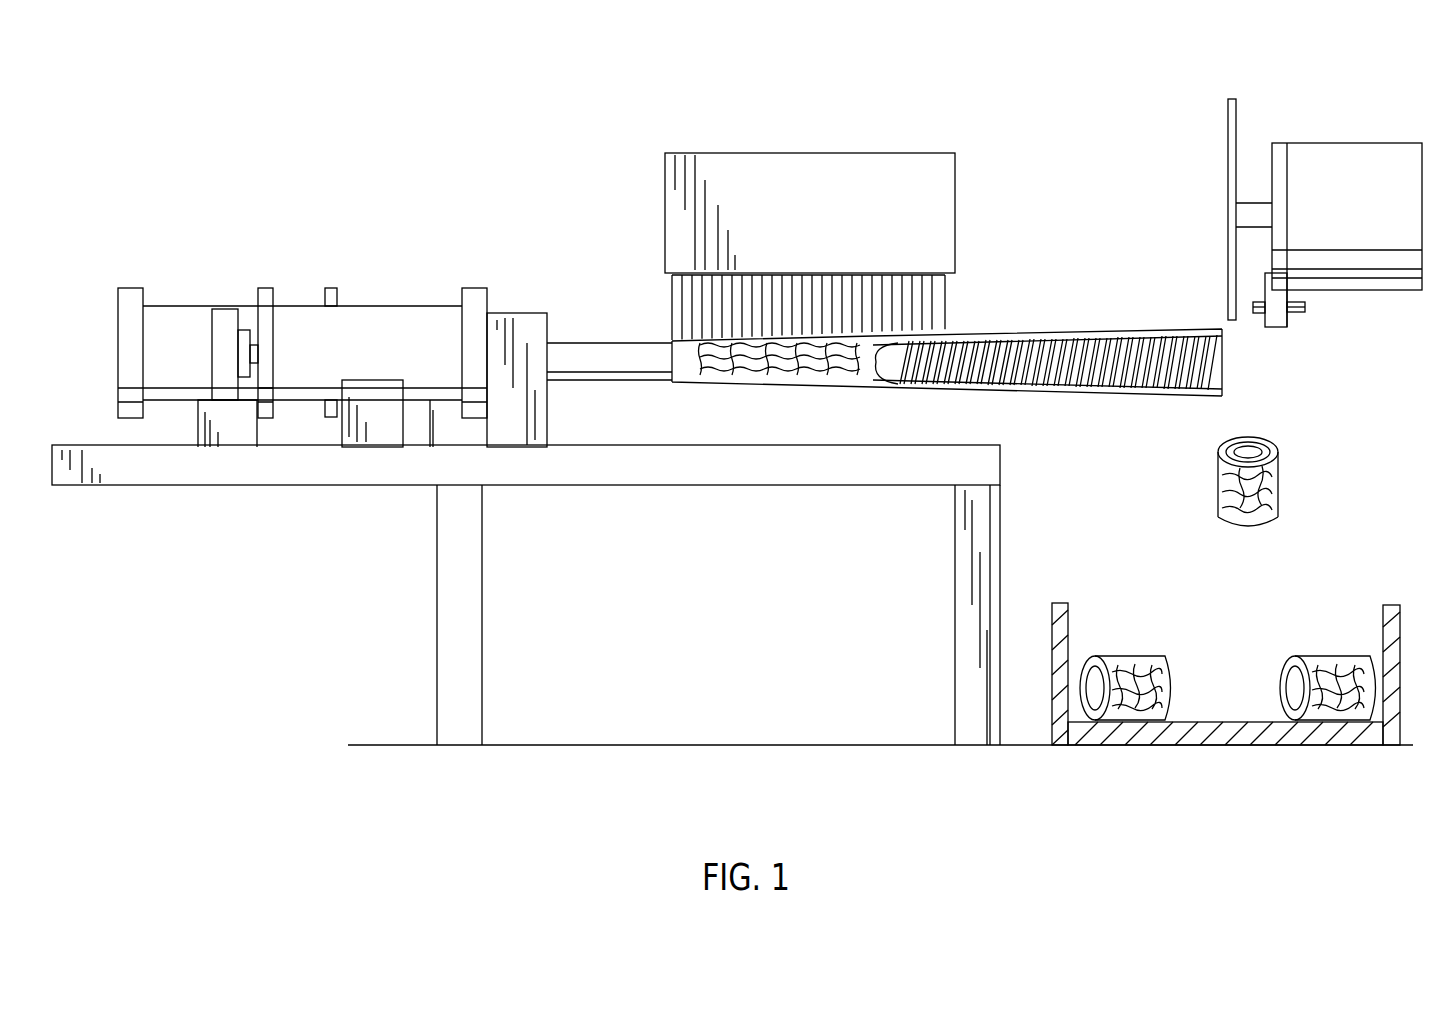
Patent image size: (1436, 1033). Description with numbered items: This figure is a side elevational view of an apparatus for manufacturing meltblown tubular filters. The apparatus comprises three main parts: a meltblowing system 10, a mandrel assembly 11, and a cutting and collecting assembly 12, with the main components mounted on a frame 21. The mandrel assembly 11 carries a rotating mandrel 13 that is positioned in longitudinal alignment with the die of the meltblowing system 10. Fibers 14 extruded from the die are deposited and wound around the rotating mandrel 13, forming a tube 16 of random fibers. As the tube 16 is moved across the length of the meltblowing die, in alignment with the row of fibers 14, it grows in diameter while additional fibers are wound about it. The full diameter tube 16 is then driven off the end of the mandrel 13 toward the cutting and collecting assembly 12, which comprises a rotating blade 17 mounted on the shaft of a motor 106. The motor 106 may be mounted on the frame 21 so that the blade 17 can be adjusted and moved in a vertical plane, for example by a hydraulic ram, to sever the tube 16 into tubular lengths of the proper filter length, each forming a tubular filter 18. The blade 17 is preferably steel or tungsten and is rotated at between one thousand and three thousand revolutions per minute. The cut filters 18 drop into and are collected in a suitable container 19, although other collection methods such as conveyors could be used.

The meltblowing system 10 is at (853, 113).
The mandrel assembly 11 is at (398, 225).
The cutting and collecting assembly 12 is at (1277, 180).
The rotating mandrel 13 is at (1107, 358).
The fibers 14 is at (670, 308).
The tube 16 is at (770, 388).
The rotating blade 17 is at (1227, 242).
The tubular filter 18 is at (1215, 480).
The container 19 is at (1395, 605).
The frame 21 is at (653, 487).
The motor 106 is at (1337, 143).